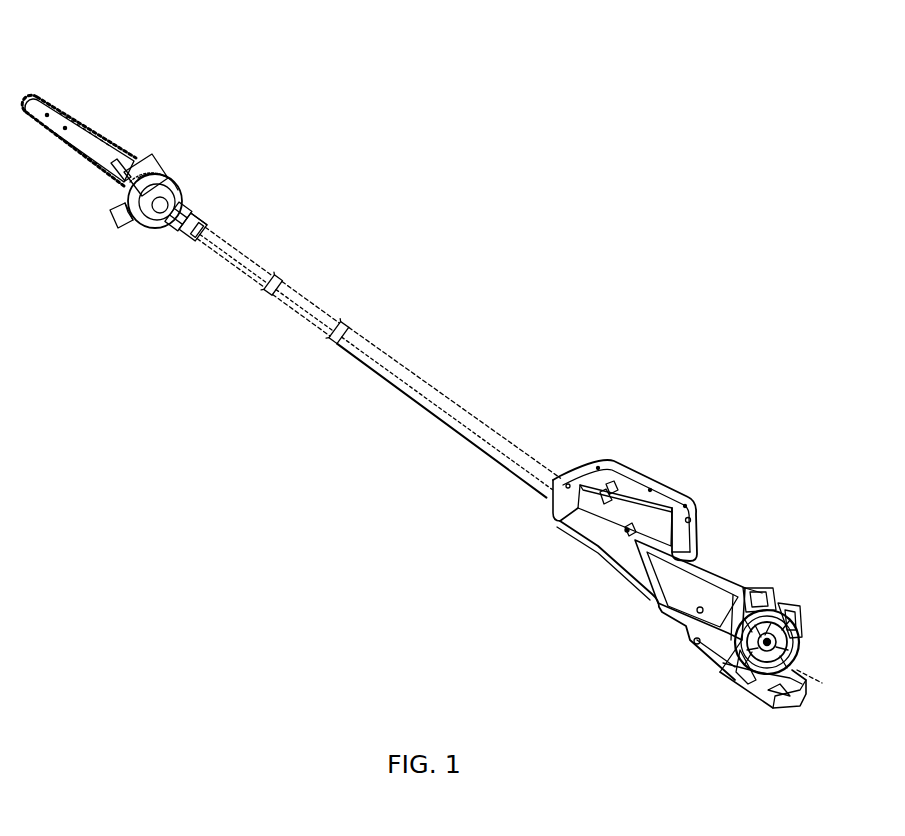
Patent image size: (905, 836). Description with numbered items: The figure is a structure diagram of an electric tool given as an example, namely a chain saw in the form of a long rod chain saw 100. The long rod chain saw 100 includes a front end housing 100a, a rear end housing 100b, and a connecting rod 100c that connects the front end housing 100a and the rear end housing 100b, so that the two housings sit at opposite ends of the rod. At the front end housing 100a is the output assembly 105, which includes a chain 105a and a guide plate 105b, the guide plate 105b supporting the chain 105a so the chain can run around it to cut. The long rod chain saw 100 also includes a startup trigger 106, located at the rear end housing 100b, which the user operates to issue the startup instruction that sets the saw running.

The long rod chain saw 100 is at (522, 153).
The front end housing 100a is at (185, 191).
The rear end housing 100b is at (728, 582).
The connecting rod 100c is at (433, 394).
The output assembly 105 is at (73, 163).
The chain 105a is at (107, 134).
The guide plate 105b is at (63, 110).
The startup trigger 106 is at (647, 477).